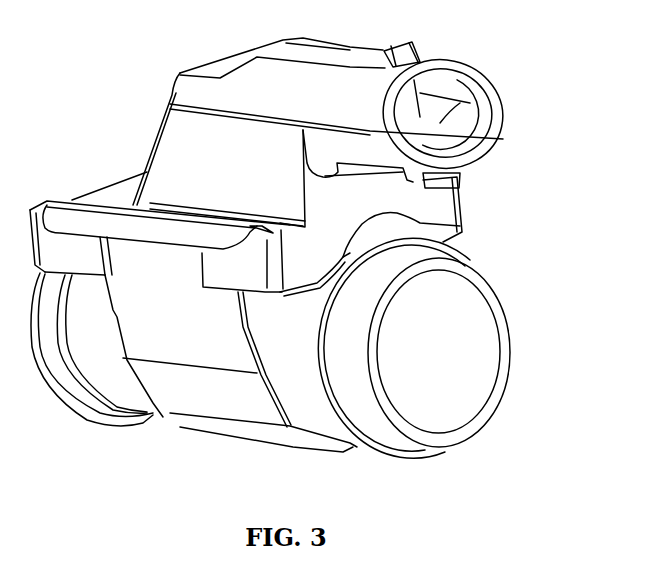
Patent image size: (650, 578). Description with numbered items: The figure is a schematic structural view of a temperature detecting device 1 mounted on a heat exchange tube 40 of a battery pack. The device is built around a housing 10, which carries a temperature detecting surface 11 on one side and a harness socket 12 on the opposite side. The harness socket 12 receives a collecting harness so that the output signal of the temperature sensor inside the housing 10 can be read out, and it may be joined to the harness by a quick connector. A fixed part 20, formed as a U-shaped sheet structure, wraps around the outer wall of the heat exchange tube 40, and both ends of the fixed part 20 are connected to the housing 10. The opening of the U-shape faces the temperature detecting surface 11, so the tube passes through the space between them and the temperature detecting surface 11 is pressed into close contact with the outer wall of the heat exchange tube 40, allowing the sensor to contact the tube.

The temperature detecting device 1 is at (115, 44).
The housing 10 is at (220, 183).
The temperature detecting surface 11 is at (443, 242).
The harness socket 12 is at (503, 137).
The fixed part 20 is at (213, 357).
The heat exchange tube 40 is at (370, 342).